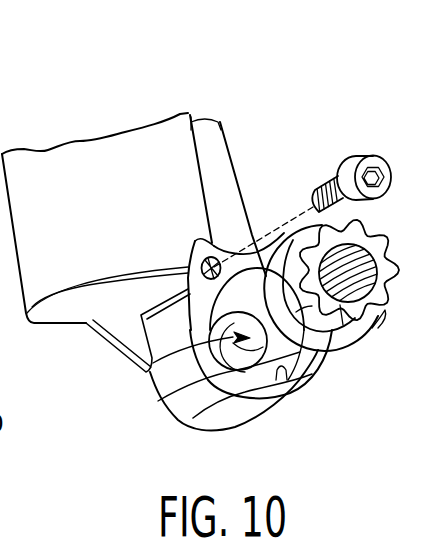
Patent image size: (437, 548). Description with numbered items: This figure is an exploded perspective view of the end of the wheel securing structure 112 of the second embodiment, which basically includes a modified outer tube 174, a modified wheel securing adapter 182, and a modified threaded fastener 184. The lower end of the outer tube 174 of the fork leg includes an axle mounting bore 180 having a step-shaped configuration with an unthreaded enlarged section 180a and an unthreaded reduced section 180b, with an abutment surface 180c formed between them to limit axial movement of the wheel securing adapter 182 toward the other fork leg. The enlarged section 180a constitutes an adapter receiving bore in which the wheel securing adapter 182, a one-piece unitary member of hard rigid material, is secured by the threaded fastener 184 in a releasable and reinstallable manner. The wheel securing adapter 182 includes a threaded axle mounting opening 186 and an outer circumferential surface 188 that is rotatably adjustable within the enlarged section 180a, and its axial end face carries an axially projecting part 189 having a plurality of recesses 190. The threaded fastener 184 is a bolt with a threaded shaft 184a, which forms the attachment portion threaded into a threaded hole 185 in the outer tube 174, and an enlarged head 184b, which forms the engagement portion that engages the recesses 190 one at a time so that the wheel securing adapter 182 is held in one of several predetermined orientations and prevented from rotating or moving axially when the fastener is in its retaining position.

The wheel securing structure 112 is at (377, 116).
The outer tube 174 is at (97, 133).
The axle mounting bore 180 is at (147, 372).
The enlarged section 180a is at (272, 380).
The reduced section 180b is at (160, 400).
The abutment surface 180c is at (193, 418).
The wheel securing adapter 182 is at (373, 333).
The threaded fastener 184 is at (363, 153).
The threaded shaft 184a is at (335, 176).
The enlarged head 184b is at (347, 155).
The threaded hole 185 is at (195, 240).
The threaded axle mounting opening 186 is at (350, 316).
The outer circumferential surface 188 is at (318, 342).
The axially projecting part 189 is at (390, 282).
The recesses 190 is at (291, 223).